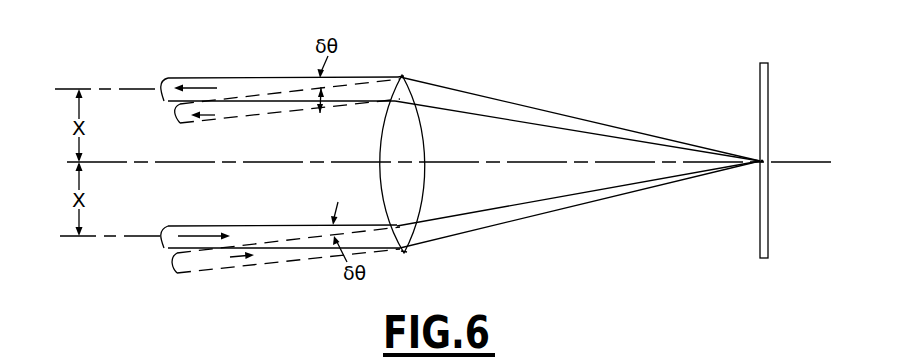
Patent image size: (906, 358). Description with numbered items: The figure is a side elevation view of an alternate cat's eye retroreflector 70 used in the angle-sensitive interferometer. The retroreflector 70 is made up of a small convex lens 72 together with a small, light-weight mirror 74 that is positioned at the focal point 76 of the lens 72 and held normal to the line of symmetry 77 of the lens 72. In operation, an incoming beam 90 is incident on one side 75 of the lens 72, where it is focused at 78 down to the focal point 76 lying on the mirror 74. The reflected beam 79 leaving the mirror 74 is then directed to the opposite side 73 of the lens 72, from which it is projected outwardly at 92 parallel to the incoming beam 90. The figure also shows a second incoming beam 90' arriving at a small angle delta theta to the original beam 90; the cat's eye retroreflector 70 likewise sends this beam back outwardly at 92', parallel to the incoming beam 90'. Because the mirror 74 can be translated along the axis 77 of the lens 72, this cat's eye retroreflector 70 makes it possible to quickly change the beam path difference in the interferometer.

The cat's eye retroreflector 70 is at (471, 72).
The convex lens 72 is at (381, 138).
The opposite side of lens 73 is at (401, 75).
The mirror 74 is at (760, 95).
The one side of lens 75 is at (403, 251).
The focal point 76 is at (764, 160).
The line of symmetry 77 is at (118, 162).
The focused beam 78 is at (516, 220).
The reflected beam 79 is at (530, 108).
The incoming beam 90 is at (280, 217).
The angled incoming beam 90' is at (286, 264).
The outgoing beam 92 is at (279, 71).
The angled outgoing beam 92' is at (287, 115).